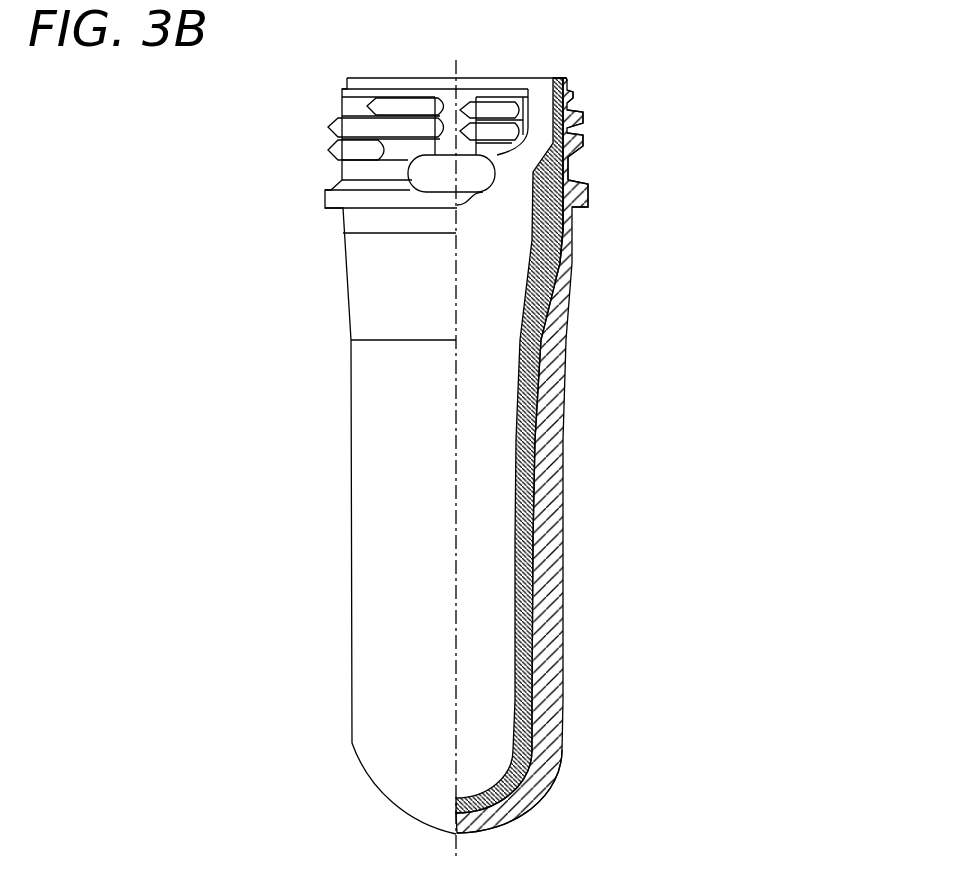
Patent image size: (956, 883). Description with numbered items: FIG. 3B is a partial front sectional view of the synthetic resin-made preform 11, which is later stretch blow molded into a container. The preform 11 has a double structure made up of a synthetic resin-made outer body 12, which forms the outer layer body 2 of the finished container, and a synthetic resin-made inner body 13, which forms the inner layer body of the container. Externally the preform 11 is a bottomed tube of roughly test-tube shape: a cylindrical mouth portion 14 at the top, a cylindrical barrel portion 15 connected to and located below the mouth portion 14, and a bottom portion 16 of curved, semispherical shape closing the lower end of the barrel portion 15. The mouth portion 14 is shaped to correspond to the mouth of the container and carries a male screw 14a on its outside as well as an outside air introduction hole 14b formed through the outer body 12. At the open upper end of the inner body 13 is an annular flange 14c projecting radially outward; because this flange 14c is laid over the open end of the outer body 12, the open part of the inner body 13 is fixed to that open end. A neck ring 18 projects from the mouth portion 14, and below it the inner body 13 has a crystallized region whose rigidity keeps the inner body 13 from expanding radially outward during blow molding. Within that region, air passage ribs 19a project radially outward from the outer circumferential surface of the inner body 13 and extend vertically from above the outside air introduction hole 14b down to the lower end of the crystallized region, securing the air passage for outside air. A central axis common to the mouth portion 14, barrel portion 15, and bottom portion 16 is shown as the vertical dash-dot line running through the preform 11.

The outer layer body 2 is at (457, 446).
The preform 11 is at (722, 98).
The outer body 12 is at (577, 436).
The inner body 13 is at (500, 517).
The mouth portion 14 is at (585, 152).
The male screw 14a is at (583, 116).
The outside air introduction hole 14b is at (437, 172).
The annular flange 14c is at (570, 81).
The barrel portion 15 is at (577, 496).
The bottom portion 16 is at (538, 813).
The neck ring 18 is at (589, 204).
The air passage ribs 19a is at (562, 234).